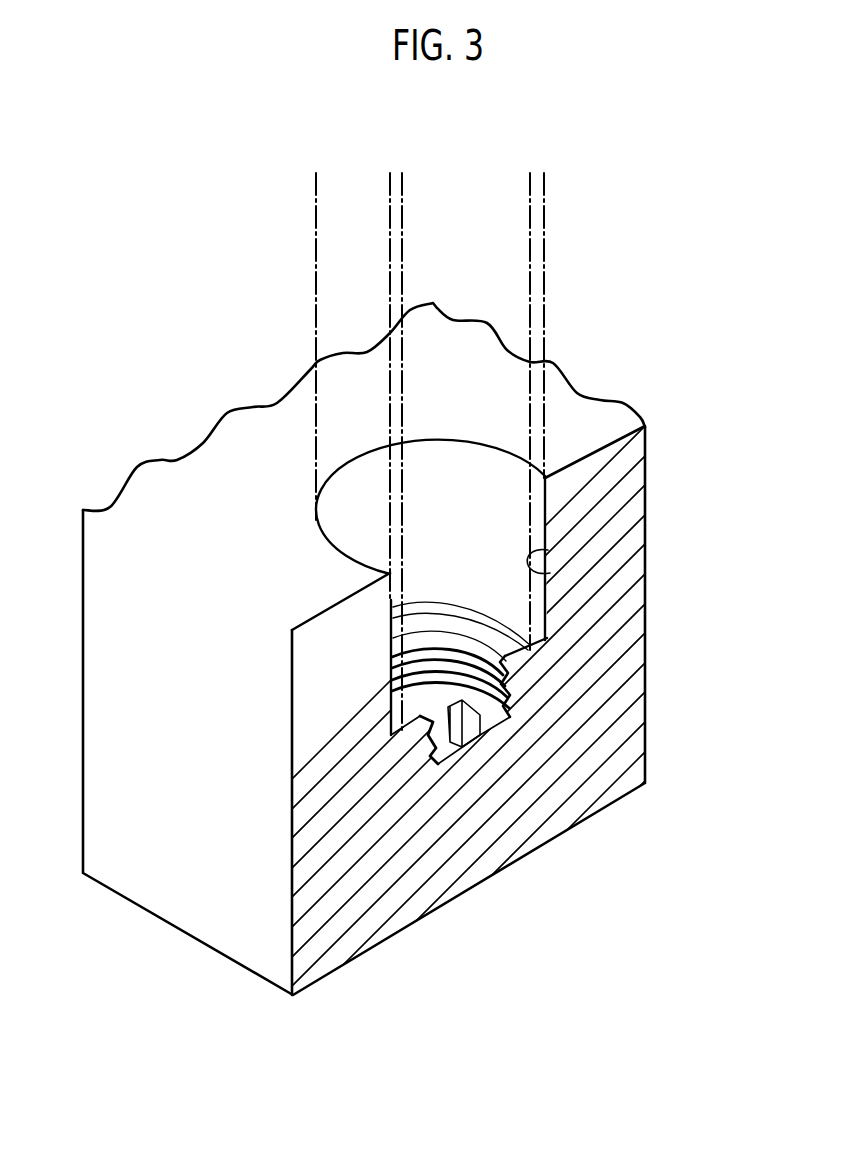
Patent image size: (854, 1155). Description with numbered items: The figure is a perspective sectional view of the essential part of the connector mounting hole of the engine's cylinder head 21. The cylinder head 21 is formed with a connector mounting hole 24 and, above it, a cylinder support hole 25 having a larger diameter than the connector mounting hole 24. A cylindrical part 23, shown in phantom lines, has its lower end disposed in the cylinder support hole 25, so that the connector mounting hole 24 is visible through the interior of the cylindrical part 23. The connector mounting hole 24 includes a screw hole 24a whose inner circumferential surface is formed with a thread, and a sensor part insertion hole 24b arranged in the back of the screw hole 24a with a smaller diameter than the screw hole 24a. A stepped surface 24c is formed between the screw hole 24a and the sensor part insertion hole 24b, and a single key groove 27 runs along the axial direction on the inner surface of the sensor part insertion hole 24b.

The cylinder head 21 is at (628, 490).
The cylindrical part 23 is at (542, 283).
The connector mounting hole 24 is at (717, 673).
The screw hole 24a is at (505, 722).
The sensor part insertion hole 24b is at (440, 735).
The stepped surface 24c is at (481, 735).
The cylinder support hole 25 is at (547, 573).
The key groove 27 is at (437, 738).